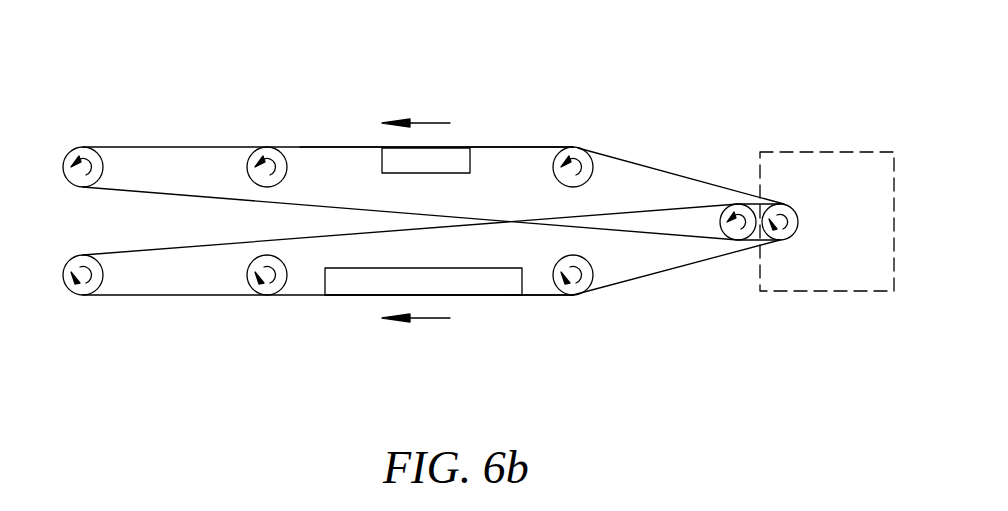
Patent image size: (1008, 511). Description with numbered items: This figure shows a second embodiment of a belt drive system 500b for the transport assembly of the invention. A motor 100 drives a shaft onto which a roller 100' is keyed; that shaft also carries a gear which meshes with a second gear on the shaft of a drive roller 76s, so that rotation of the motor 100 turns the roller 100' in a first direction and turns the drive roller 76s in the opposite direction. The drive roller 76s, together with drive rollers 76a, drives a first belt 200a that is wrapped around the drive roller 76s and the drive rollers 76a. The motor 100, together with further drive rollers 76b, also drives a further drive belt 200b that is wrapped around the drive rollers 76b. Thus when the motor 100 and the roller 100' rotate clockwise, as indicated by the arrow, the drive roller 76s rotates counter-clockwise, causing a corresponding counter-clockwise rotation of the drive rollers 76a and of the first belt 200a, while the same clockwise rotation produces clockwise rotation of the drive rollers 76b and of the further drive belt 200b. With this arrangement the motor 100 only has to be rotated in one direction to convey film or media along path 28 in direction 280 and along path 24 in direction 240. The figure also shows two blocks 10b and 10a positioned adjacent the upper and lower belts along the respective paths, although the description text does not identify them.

The drive rollers 76a is at (93, 150).
The drive rollers 76b is at (85, 293).
The drive roller 76s is at (736, 230).
The roller 100' is at (807, 201).
The motor 100 is at (838, 250).
The first belt 200a is at (676, 172).
The further drive belt 200b is at (647, 275).
The path 28 is at (516, 147).
The path 24 is at (472, 282).
The upper platen 10b is at (423, 163).
The lower platen 10a is at (428, 282).
The direction 280 is at (430, 123).
The direction 240 is at (433, 318).
The belt drive system 500b is at (670, 106).